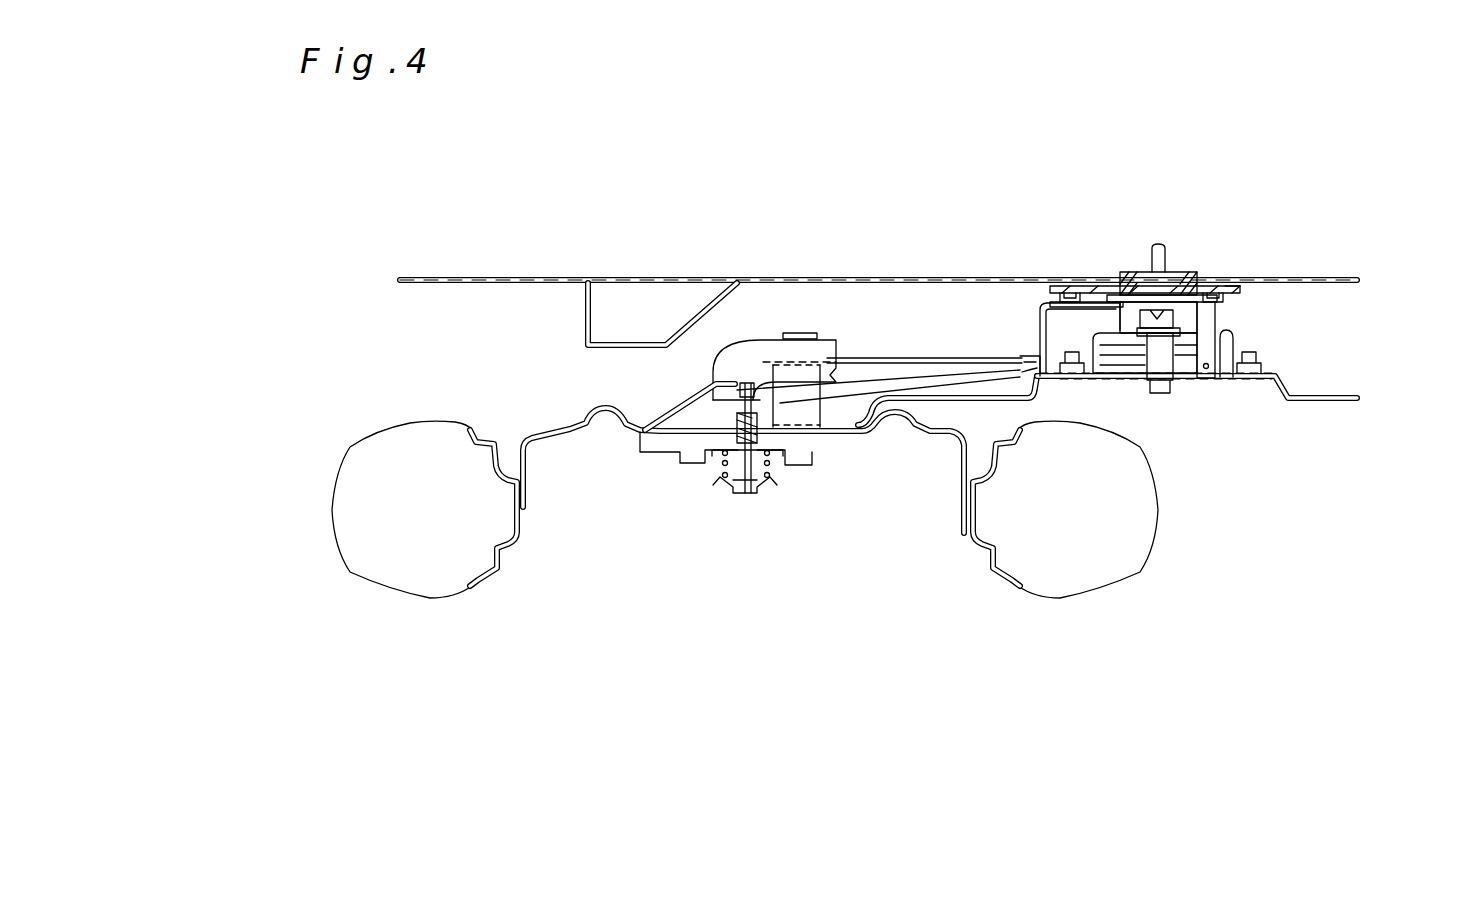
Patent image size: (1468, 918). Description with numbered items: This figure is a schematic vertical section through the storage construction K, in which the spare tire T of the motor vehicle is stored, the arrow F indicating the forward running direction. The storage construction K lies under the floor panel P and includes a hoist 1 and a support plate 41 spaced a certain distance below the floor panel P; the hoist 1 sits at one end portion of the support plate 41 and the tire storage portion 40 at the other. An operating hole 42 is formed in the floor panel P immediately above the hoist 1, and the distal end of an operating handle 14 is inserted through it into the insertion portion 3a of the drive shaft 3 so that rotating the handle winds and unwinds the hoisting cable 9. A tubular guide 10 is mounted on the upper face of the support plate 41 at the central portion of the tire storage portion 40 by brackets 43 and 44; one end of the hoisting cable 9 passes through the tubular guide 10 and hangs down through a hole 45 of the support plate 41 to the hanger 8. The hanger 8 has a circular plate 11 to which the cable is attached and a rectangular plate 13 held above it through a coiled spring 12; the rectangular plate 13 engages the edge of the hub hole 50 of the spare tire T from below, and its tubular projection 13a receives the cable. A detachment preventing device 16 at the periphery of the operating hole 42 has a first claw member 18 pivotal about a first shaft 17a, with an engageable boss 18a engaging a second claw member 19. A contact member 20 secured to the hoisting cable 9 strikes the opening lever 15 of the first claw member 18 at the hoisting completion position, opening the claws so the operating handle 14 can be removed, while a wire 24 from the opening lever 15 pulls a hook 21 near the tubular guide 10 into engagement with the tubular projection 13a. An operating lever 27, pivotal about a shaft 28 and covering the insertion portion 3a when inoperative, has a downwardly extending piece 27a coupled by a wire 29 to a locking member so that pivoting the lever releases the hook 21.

The hoist 1 is at (1378, 318).
The drive shaft 3 is at (1157, 380).
The insertion portion 3a is at (1230, 286).
The hanger 8 is at (717, 497).
The hoisting cable 9 is at (917, 358).
The tubular guide 10 is at (793, 355).
The circular plate 11 is at (765, 495).
The coiled spring 12 is at (777, 472).
The rectangular plate 13 is at (717, 477).
The tubular projection 13a is at (822, 455).
The operating handle 14 is at (1163, 248).
The opening lever 15 is at (1037, 352).
The detachment preventing device 16 is at (1035, 293).
The first shaft 17a is at (1067, 285).
The first claw member 18 is at (1097, 320).
The engageable boss 18a is at (1107, 285).
The second claw member 19 is at (1077, 286).
The contact member 20 is at (1020, 360).
The hook 21 is at (693, 433).
The wire 24 is at (908, 400).
The operating lever 27 is at (1182, 284).
The downwardly extending piece 27a is at (1207, 322).
The shaft 28 is at (1213, 285).
The wire 29 is at (848, 422).
The tire storage portion 40 is at (817, 543).
The support plate 41 is at (1340, 395).
The operating hole 42 is at (1148, 270).
The bracket 43 is at (690, 404).
The bracket 44 is at (860, 433).
The hole 45 is at (740, 385).
The hub hole 50 is at (780, 458).
The floor panel P is at (490, 278).
The forward running direction F is at (255, 379).
The spare tire T is at (548, 425).
The storage construction K is at (1252, 538).